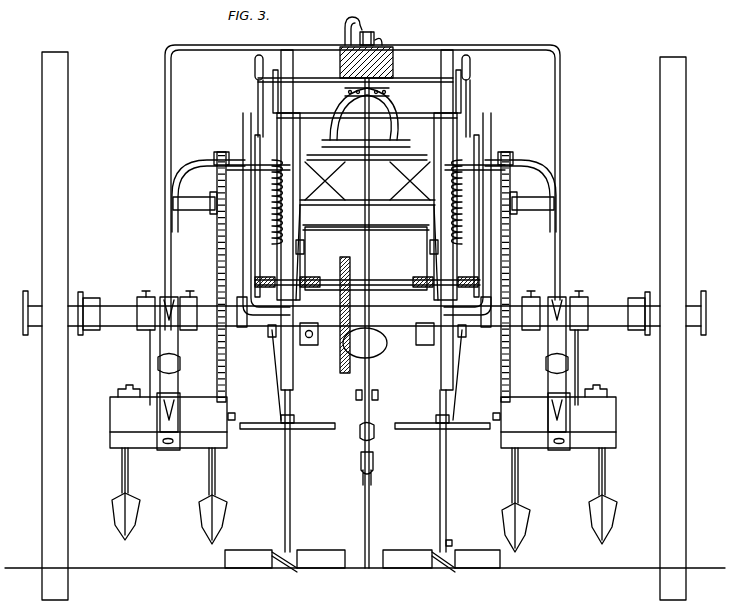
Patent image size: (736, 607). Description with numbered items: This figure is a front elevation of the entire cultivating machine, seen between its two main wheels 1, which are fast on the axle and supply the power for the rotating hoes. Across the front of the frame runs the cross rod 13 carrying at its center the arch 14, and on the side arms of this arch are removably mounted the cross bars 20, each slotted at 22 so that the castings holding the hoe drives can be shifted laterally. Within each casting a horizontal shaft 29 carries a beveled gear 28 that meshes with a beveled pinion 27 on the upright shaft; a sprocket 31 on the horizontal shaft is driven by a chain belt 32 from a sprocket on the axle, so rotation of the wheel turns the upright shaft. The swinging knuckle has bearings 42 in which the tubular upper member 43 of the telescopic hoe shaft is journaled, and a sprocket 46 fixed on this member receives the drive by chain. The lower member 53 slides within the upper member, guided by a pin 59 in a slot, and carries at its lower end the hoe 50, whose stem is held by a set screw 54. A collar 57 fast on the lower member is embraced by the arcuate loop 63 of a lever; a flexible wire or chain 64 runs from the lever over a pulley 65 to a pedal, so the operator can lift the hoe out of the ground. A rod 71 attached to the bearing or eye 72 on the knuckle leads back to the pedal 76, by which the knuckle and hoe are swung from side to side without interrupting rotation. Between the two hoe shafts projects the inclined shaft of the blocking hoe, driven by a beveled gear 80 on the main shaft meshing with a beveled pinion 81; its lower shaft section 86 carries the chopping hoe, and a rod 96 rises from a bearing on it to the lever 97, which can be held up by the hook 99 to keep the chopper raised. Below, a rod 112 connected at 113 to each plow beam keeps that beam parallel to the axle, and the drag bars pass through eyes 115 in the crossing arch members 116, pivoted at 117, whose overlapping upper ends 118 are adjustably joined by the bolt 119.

The main wheel 1 is at (68, 538).
The cross rod 13 is at (113, 308).
The arch 14 is at (407, 78).
The cross bar 20 is at (400, 120).
The slot 22 is at (367, 201).
The beveled pinion 27 is at (304, 247).
The beveled gear 28 is at (272, 222).
The horizontal shaft 29 is at (192, 210).
The sprocket 31 is at (214, 150).
The chain belt 32 is at (216, 267).
The bearing 42 is at (457, 118).
The tubular upper member 43 is at (293, 348).
The sprocket 46 is at (472, 282).
The hoe 50 is at (252, 552).
The lower member 53 is at (453, 365).
The set screw 54 is at (449, 540).
The collar 57 is at (296, 418).
The pin 59 is at (292, 385).
The loop 63 is at (265, 430).
The wire or chain 64 is at (272, 380).
The pulley 65 is at (268, 333).
The rod 71 is at (330, 222).
The bearing or eye 72 is at (367, 214).
The pedal 76 is at (316, 330).
The beveled gear 80 is at (345, 373).
The beveled pinion 81 is at (380, 350).
The shaft section 86 is at (370, 496).
The rod 96 is at (370, 400).
The lever 97 is at (376, 34).
The hook 99 is at (344, 33).
The rod 112 is at (580, 375).
The connection point 113 is at (585, 418).
The eye 115 is at (178, 362).
The arch member 116 is at (170, 182).
The pivot 117 is at (367, 182).
The upper end 118 is at (334, 107).
The bolt 119 is at (350, 90).